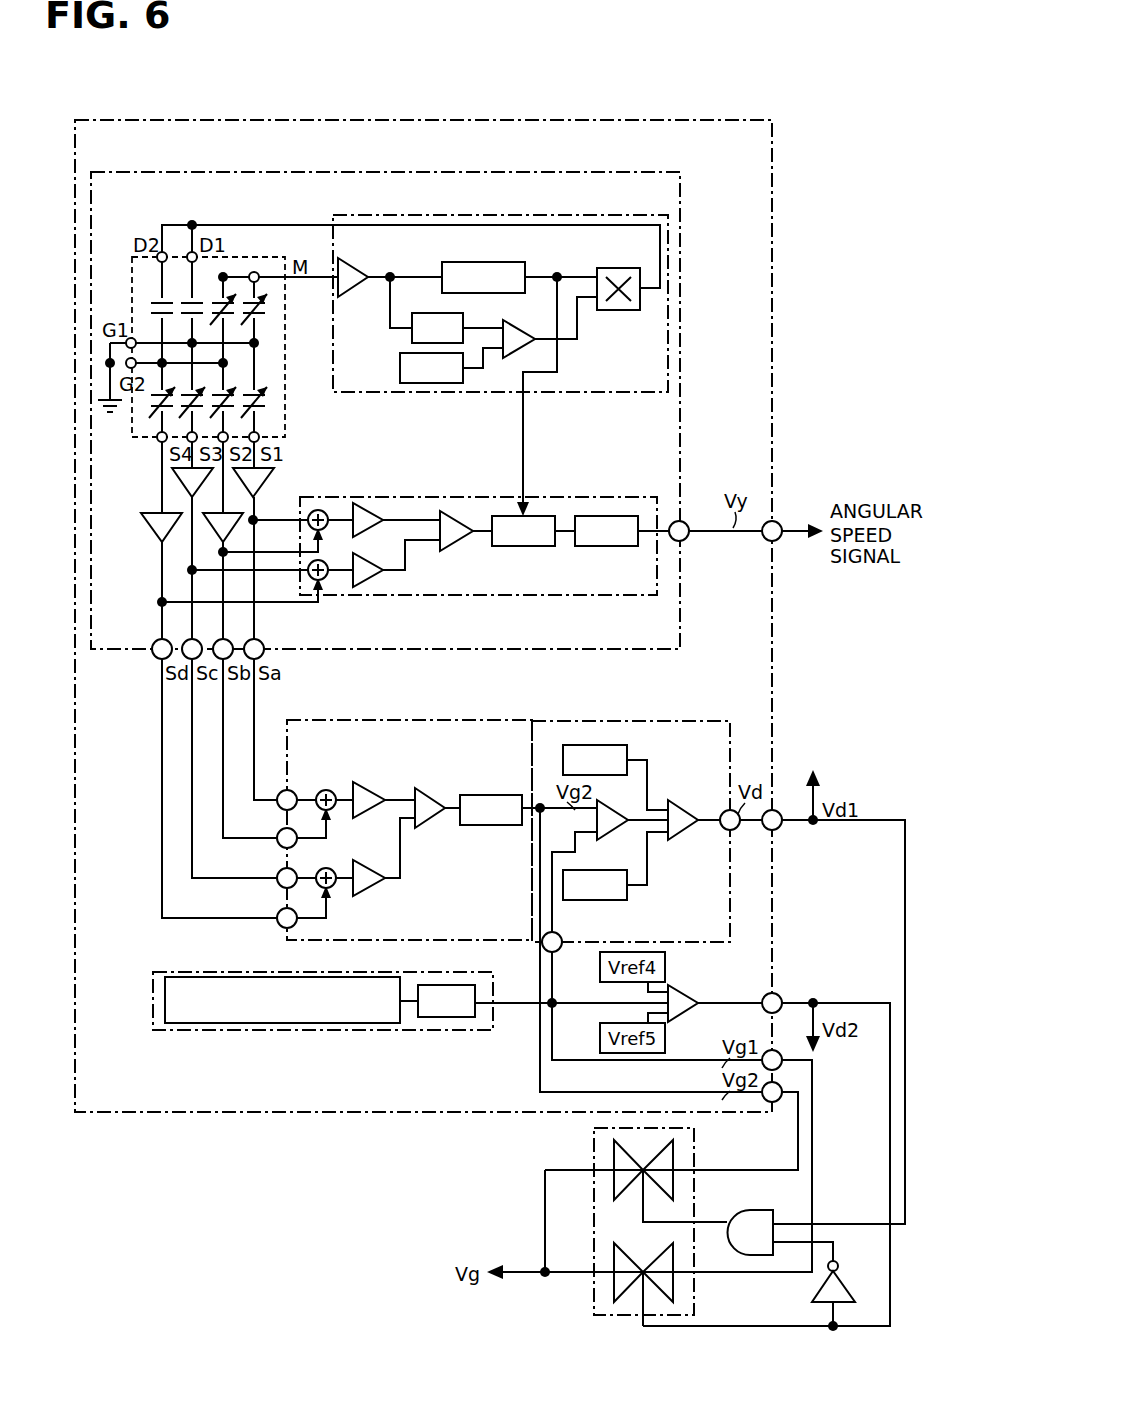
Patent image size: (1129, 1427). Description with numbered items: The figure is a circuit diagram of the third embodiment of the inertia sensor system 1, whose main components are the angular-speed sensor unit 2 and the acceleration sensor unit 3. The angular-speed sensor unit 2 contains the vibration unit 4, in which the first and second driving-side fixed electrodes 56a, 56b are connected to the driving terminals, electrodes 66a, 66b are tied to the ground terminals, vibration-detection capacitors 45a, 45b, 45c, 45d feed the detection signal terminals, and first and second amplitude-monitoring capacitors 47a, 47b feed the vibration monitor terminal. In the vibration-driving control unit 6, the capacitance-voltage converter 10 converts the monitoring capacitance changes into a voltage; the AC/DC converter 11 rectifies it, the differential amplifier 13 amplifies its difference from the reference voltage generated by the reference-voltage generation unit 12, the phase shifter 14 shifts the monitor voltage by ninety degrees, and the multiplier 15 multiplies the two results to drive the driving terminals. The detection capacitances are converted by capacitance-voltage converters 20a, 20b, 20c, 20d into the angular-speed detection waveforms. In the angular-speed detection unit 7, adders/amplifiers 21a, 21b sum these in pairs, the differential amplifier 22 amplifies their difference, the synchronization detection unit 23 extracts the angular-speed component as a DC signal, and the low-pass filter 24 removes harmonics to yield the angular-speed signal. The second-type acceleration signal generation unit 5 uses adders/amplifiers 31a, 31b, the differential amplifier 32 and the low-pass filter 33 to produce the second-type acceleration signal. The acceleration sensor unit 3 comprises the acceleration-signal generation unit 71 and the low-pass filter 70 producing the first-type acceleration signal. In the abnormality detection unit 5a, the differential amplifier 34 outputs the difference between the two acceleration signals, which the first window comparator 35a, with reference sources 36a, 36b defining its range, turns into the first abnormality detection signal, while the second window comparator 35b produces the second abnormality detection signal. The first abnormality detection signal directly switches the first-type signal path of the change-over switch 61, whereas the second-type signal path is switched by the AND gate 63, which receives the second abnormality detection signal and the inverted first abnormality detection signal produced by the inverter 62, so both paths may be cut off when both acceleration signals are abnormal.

The inertia sensor system 1 is at (415, 120).
The angular-speed sensor unit 2 is at (325, 172).
The acceleration sensor unit 3 is at (305, 1030).
The vibration unit 4 is at (242, 257).
The second-type acceleration signal generation unit 5 is at (405, 720).
The abnormality detection unit 5a is at (663, 721).
The vibration-driving control unit 6 is at (470, 215).
The angular-speed detection unit 7 is at (600, 497).
The capacitance-voltage converter 10 is at (366, 267).
The AC/DC converter 11 is at (463, 320).
The reference-voltage generation unit 12 is at (400, 368).
The differential amplifier 13 is at (520, 330).
The phase shifter 14 is at (478, 262).
The multiplier 15 is at (615, 310).
The capacitance-voltage converter 20a is at (270, 481).
The capacitance-voltage converter 20b is at (249, 516).
The capacitance-voltage converter 20c is at (185, 482).
The capacitance-voltage converter 20d is at (152, 522).
The adder/amplifier 21a is at (372, 508).
The adder/amplifier 21b is at (372, 582).
The differential amplifier 22 is at (455, 543).
The synchronization detection unit 23 is at (523, 546).
The low-pass filter 24 is at (606, 546).
The adder/amplifier 31a is at (372, 787).
The adder/amplifier 31b is at (374, 888).
The differential amplifier 32 is at (432, 798).
The low-pass filter 33 is at (480, 795).
The differential amplifier 34 is at (624, 800).
The first window comparator 35a is at (694, 800).
The second window comparator 35b is at (693, 978).
The reference voltage source 36a is at (620, 745).
The reference voltage source 36b is at (627, 898).
The vibration-detection capacitor 45a is at (262, 403).
The vibration-detection capacitor 45b is at (236, 418).
The vibration-detection capacitor 45c is at (182, 412).
The vibration-detection capacitor 45d is at (152, 412).
The first amplitude-monitoring capacitor 47a is at (264, 312).
The second amplitude-monitoring capacitor 47b is at (238, 318).
The first driving-side fixed electrode 56a is at (185, 320).
The second driving-side fixed electrode 56b is at (155, 316).
The change-over switch 61 is at (594, 1140).
The inverter 62 is at (812, 1292).
The AND gate 63 is at (762, 1210).
The electrode 66a is at (186, 298).
The electrode 66b is at (152, 298).
The low-pass filter 70 is at (455, 1017).
The acceleration-signal generation unit 71 is at (362, 1023).